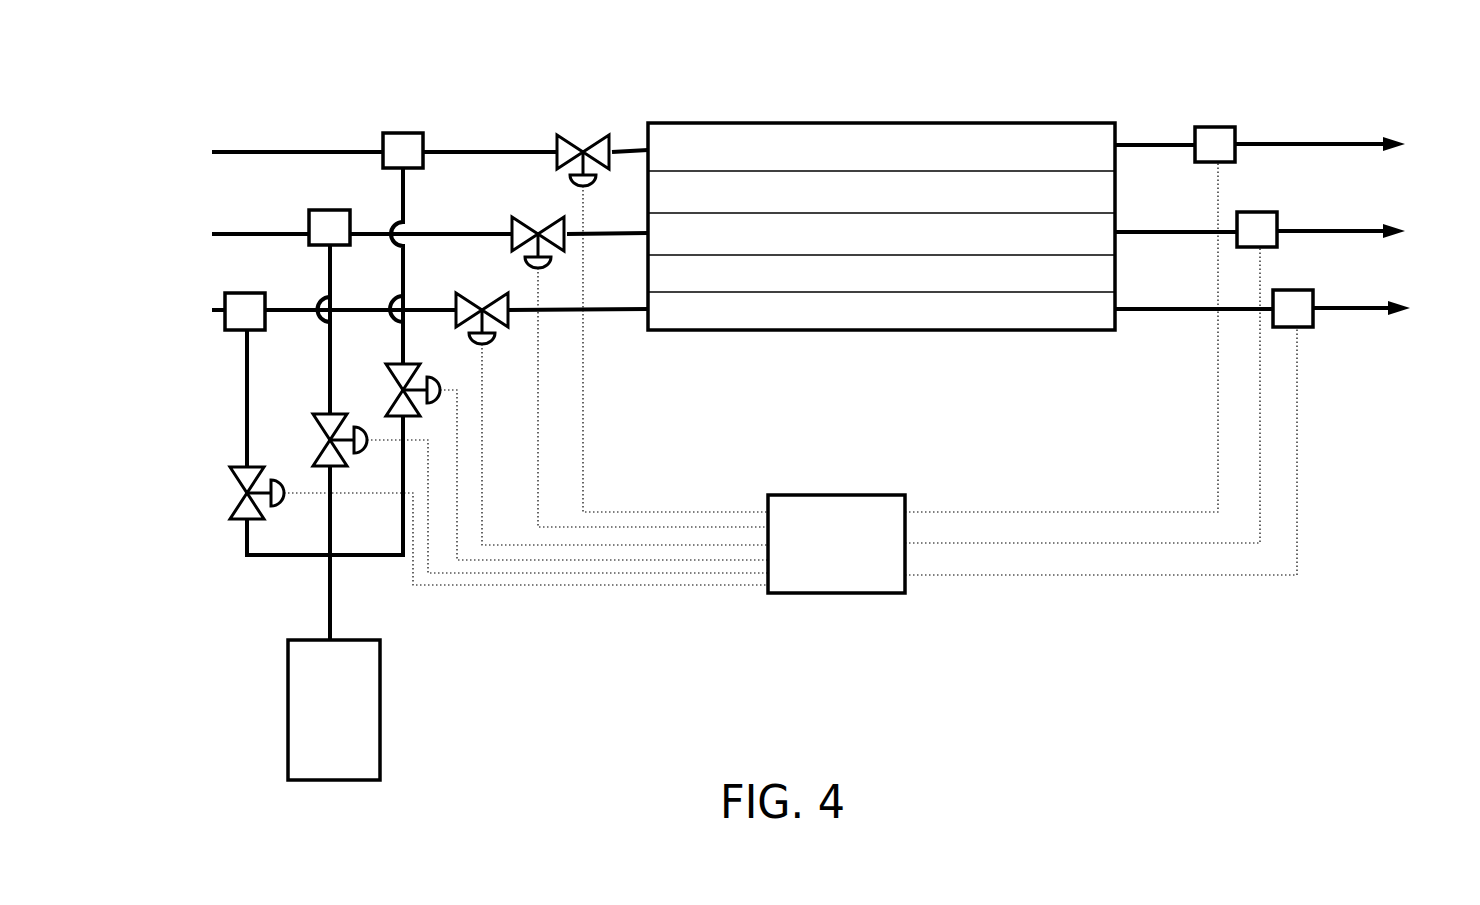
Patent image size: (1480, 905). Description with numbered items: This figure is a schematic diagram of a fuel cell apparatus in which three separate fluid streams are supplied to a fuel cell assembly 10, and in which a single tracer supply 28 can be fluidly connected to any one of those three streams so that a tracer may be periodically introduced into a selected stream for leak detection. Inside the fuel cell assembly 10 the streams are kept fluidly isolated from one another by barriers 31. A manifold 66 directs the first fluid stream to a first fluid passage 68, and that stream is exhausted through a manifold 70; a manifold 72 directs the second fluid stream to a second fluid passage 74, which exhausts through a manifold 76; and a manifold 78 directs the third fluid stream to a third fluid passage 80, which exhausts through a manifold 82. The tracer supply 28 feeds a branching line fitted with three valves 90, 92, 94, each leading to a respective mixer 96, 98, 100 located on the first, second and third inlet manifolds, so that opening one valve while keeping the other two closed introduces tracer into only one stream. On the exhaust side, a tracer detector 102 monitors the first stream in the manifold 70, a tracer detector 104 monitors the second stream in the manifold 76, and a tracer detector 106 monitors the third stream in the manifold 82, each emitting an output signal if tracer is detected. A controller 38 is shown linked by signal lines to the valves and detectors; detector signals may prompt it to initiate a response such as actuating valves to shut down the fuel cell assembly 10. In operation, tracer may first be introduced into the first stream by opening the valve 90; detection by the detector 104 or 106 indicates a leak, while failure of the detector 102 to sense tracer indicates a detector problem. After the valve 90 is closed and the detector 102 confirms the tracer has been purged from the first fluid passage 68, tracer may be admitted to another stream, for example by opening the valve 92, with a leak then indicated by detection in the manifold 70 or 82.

The fuel cell assembly 10 is at (941, 52).
The tracer supply 28 is at (303, 702).
The barriers 31 is at (1082, 206).
The controller 38 is at (830, 532).
The manifold 66 is at (240, 234).
The first fluid passage 68 is at (765, 233).
The manifold 70 is at (1370, 228).
The manifold 72 is at (231, 152).
The second fluid passage 74 is at (693, 148).
The manifold 76 is at (1373, 143).
The manifold 78 is at (222, 311).
The third fluid passage 80 is at (905, 310).
The manifold 82 is at (1373, 303).
The valve 90 is at (325, 427).
The valve 92 is at (390, 370).
The valve 94 is at (245, 505).
The mixer 96 is at (331, 226).
The mixer 98 is at (402, 150).
The mixer 100 is at (245, 307).
The tracer detector 102 is at (1260, 228).
The tracer detector 104 is at (1218, 140).
The tracer detector 106 is at (1297, 312).